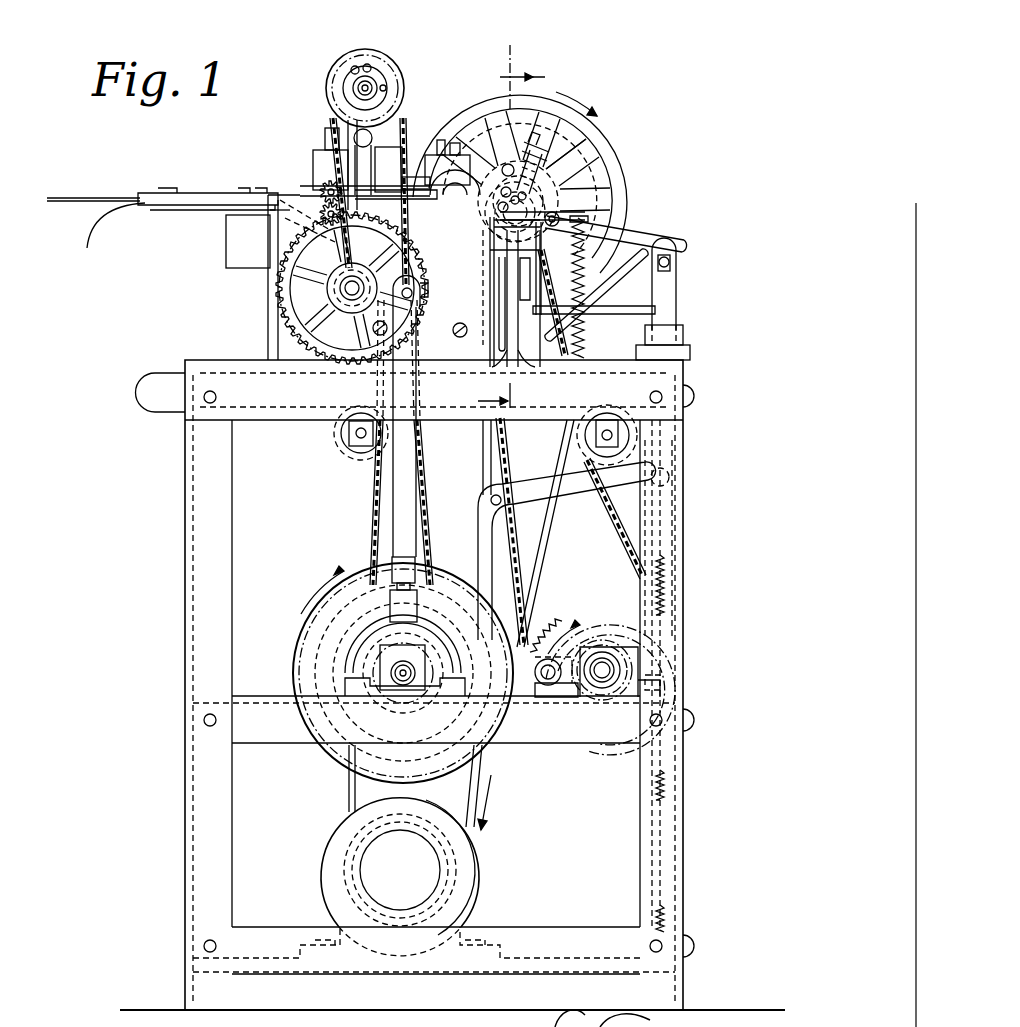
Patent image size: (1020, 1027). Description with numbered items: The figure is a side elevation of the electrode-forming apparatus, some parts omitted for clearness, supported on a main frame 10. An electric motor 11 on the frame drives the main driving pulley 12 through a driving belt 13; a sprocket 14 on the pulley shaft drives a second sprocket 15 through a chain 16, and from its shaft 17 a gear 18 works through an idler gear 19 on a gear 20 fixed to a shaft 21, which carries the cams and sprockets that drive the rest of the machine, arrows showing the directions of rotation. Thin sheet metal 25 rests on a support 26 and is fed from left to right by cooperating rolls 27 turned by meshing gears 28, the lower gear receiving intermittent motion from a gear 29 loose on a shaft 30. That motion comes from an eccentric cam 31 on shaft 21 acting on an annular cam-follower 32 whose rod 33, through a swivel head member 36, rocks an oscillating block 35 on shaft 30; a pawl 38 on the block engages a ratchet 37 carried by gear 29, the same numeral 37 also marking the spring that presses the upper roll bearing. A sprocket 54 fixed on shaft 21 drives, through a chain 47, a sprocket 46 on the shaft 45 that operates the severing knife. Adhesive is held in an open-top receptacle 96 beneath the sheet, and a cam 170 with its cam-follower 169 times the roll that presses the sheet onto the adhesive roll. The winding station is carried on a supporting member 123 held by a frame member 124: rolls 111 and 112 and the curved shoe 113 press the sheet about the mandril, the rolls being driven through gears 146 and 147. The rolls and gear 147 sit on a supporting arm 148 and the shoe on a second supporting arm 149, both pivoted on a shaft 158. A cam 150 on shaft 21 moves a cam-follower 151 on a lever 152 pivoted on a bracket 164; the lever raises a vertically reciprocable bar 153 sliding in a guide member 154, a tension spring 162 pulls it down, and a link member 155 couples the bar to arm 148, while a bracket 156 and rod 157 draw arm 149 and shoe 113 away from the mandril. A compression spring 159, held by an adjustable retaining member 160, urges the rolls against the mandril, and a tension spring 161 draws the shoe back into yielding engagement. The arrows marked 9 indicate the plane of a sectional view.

The main frame 10 is at (200, 545).
The electric motor 11 is at (478, 872).
The main driving pulley 12 is at (580, 150).
The driving belt 13 is at (543, 524).
The sprocket 14 is at (595, 193).
The second sprocket 15 is at (596, 598).
The chain 16 is at (630, 537).
The shaft 17 is at (615, 680).
The gear 18 is at (610, 650).
The idler gear 19 is at (575, 650).
The gear 20 is at (325, 592).
The shaft 21 is at (400, 675).
The thin sheet metal 25 is at (100, 196).
The platform or support 26 is at (160, 208).
The cooperating rolls 27 is at (300, 188).
The gears 28 is at (320, 190).
The gear 29 is at (305, 345).
The shaft 30 is at (350, 290).
The eccentric cam 31 is at (350, 672).
The annular cam-follower 32 is at (350, 650).
The rod 33 is at (418, 505).
The oscillating block 35 is at (352, 288).
The head member 36 is at (410, 278).
The ratchet 37 is at (325, 175).
The pawl 38 is at (420, 324).
The shaft 45 is at (366, 86).
The sprocket 46 is at (345, 62).
The chain 47 is at (430, 462).
The second sprocket 54 is at (332, 778).
The open-top receptacle 96 is at (227, 250).
The roll 111 is at (492, 162).
The roll 112 is at (567, 159).
The curved shoe 113 is at (497, 200).
The supporting member 123 is at (565, 206).
The frame member 124 is at (512, 352).
The gear 146 is at (503, 160).
The gear 147 is at (545, 150).
The supporting arm 148 is at (680, 245).
The second supporting arm 149 is at (500, 222).
The cam 150 is at (490, 760).
The cam-follower 151 is at (502, 531).
The lever 152 is at (478, 530).
The vertically reciprocable bar 153 is at (682, 338).
The guide member 154 is at (690, 357).
The link member 155 is at (676, 292).
The bracket 156 is at (625, 318).
The rod 157 is at (590, 290).
The shaft 158 is at (576, 236).
The compression spring 159 is at (565, 172).
The adjustable retaining member 160 is at (571, 89).
The tension spring 161 is at (570, 270).
The tension spring 162 is at (665, 787).
The bracket 164 is at (483, 432).
The cam-follower 169 is at (350, 142).
The cam 170 is at (335, 82).
The section line 9 is at (503, 228).